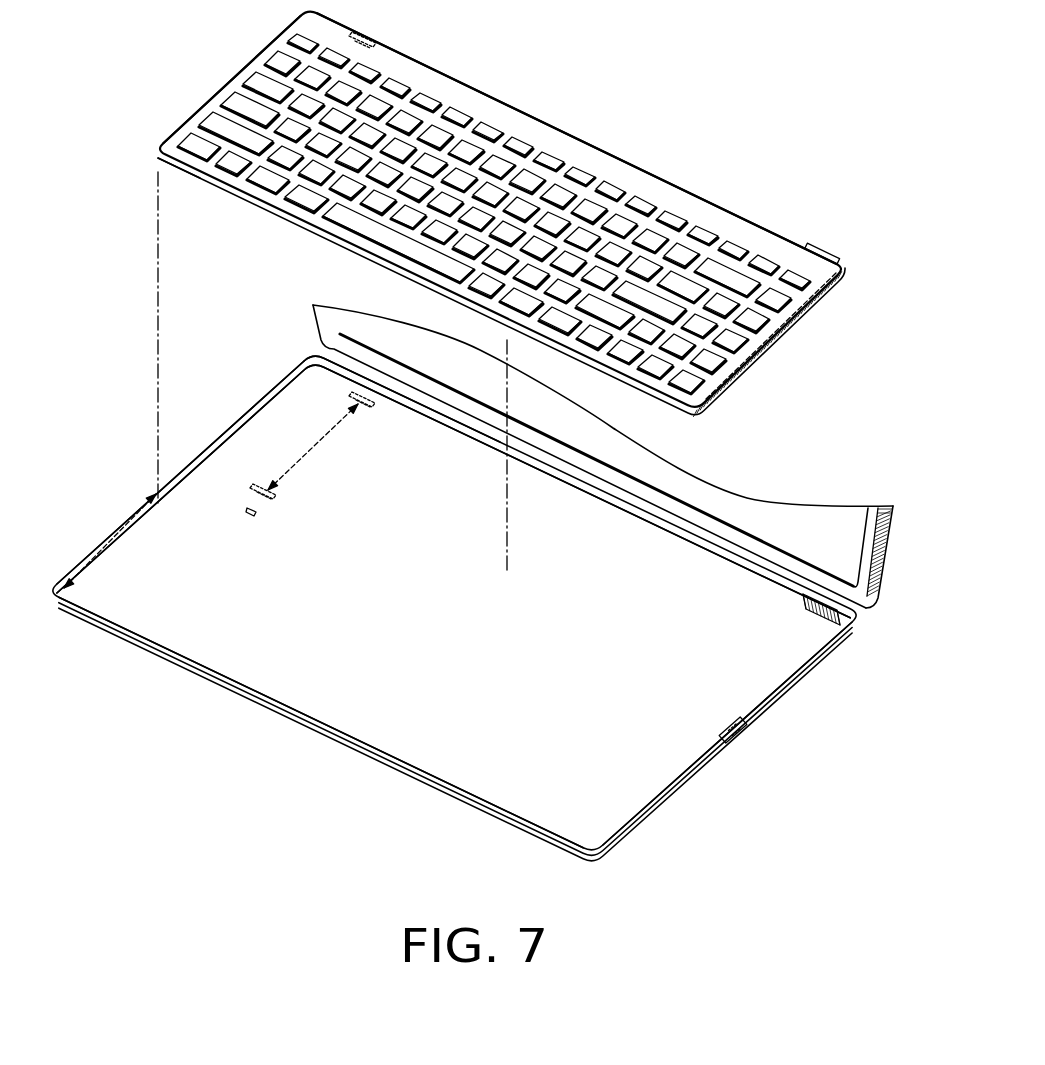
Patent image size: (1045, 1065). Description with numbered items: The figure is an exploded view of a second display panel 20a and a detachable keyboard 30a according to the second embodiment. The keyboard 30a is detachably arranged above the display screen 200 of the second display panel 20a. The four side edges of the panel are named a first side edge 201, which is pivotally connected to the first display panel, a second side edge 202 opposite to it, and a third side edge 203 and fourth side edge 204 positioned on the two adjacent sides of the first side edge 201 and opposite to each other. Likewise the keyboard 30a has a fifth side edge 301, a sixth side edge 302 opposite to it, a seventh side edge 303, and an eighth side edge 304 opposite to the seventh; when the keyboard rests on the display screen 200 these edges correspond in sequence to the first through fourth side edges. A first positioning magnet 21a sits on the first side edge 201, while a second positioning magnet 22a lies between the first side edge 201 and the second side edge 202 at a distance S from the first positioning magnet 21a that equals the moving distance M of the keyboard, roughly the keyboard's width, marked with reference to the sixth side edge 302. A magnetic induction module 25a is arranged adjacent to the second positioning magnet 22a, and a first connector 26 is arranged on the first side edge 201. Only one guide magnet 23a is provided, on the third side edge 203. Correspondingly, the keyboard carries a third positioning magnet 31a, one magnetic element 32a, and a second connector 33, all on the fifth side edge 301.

The second display panel 20a is at (213, 418).
The display screen 200 is at (428, 772).
The first side edge 201 is at (318, 350).
The second side edge 202 is at (320, 724).
The third side edge 203 is at (796, 684).
The fourth side edge 204 is at (163, 504).
The first positioning magnet 21a is at (375, 410).
The second positioning magnet 22a is at (280, 492).
The guide magnet 23a is at (748, 730).
The magnetic induction module 25a is at (257, 514).
The first connector 26 is at (816, 608).
The keyboard 30a is at (562, 118).
The fifth side edge 301 is at (682, 182).
The sixth side edge 302 is at (173, 163).
The seventh side edge 303 is at (773, 344).
The eighth side edge 304 is at (240, 78).
The third positioning magnet 31a is at (365, 32).
The magnetic element 32a is at (748, 384).
The second connector 33 is at (822, 249).